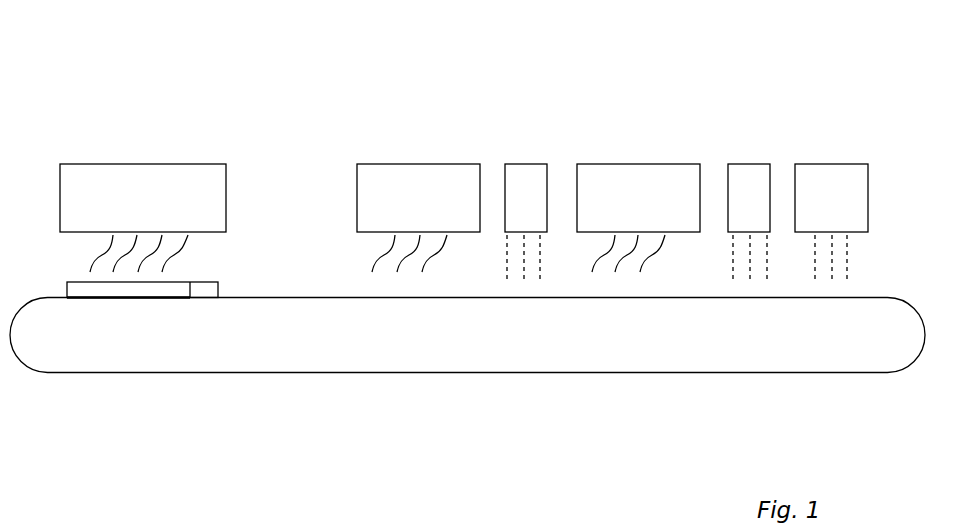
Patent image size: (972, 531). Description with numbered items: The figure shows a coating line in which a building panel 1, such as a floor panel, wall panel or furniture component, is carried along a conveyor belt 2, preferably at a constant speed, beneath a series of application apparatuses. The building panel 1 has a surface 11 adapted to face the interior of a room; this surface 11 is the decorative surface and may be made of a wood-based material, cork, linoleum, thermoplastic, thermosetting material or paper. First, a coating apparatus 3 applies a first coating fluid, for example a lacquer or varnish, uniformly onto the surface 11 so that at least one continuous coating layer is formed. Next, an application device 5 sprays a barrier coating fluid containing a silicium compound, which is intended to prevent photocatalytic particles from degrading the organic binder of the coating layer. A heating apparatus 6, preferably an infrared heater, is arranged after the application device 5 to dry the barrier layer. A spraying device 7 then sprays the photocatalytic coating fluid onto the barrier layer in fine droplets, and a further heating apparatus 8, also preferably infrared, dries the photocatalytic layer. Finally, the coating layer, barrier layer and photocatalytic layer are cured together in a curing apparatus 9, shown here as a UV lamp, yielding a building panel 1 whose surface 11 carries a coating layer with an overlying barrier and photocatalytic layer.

The building panel 1 is at (113, 290).
The conveyor belt 2 is at (542, 372).
The coating apparatus 3 is at (138, 164).
The application device 5 is at (423, 164).
The heating apparatus 6 is at (523, 164).
The spraying device 7 is at (628, 164).
The heating apparatus 8 is at (750, 164).
The curing apparatus 9 is at (832, 164).
The surface 11 is at (190, 298).